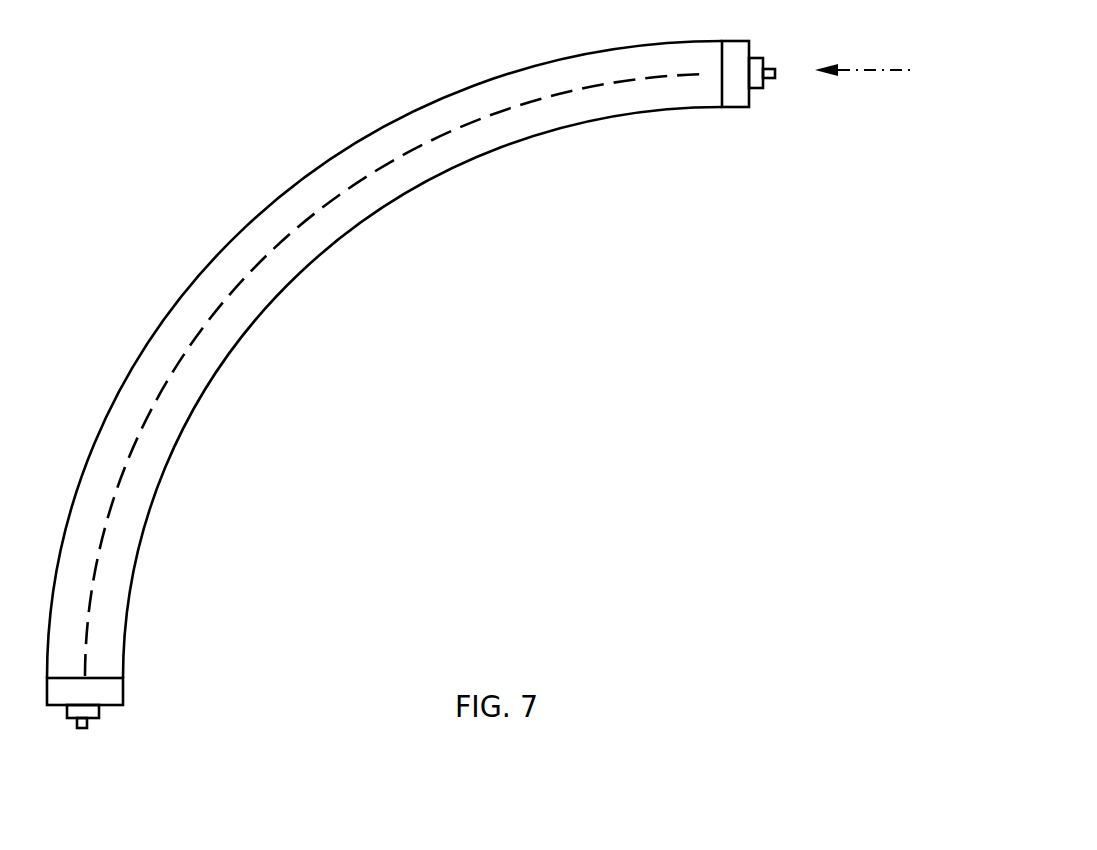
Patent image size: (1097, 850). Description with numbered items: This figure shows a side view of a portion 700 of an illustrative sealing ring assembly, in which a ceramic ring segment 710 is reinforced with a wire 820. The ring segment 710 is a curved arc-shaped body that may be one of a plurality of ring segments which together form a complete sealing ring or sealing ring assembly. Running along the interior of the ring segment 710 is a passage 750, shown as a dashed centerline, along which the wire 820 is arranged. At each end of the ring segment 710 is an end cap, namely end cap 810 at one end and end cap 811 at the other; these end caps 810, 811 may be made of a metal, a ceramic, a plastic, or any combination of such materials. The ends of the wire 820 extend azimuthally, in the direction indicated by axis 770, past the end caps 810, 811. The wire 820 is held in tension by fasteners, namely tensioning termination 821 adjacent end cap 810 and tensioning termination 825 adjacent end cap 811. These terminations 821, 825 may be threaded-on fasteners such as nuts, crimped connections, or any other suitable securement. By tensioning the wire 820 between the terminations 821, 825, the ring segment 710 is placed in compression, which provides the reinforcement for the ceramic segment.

The portion of sealing ring assembly 700 is at (193, 190).
The ceramic ring segment 710 is at (377, 130).
The passage 750 is at (323, 207).
The axis 770 is at (886, 70).
The end cap 810 is at (743, 110).
The end cap 811 is at (123, 682).
The wire 820 is at (777, 73).
The tensioning termination 821 is at (767, 57).
The tensioning termination 825 is at (99, 708).